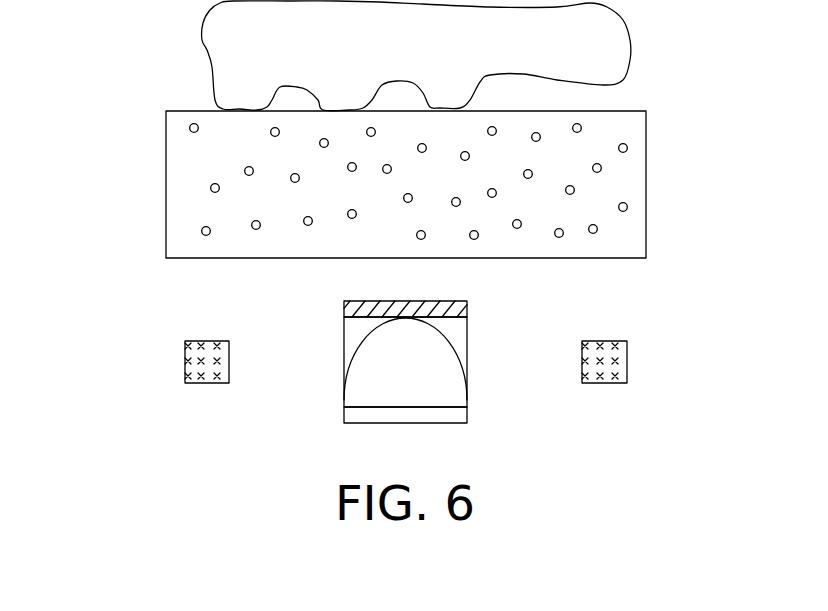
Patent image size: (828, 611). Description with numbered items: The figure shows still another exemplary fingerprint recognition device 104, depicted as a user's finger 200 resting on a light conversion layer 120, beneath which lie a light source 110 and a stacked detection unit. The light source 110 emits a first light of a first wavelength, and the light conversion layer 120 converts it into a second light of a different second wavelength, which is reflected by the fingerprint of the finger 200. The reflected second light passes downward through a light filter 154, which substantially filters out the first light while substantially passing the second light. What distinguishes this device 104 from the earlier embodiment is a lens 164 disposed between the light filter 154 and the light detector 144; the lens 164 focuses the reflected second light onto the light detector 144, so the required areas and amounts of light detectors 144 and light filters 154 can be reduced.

The fingerprint recognition device 104 is at (112, 108).
The user's finger 200 is at (620, 43).
The light conversion layer 120 is at (177, 190).
The light source 110 is at (201, 383).
The light filter 154 is at (467, 305).
The lens 164 is at (450, 365).
The light detector 144 is at (460, 415).